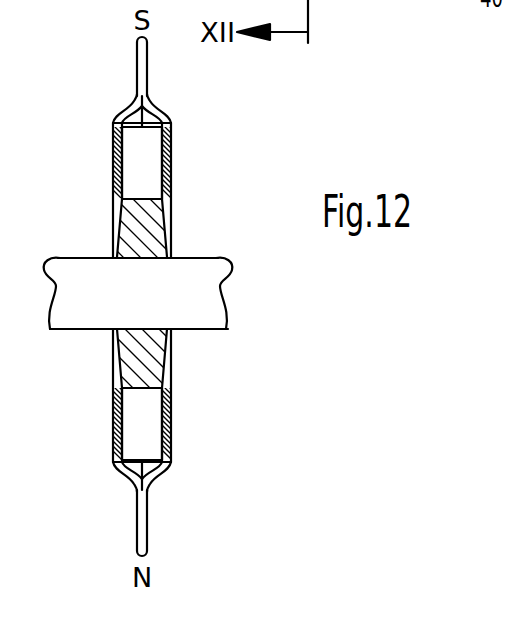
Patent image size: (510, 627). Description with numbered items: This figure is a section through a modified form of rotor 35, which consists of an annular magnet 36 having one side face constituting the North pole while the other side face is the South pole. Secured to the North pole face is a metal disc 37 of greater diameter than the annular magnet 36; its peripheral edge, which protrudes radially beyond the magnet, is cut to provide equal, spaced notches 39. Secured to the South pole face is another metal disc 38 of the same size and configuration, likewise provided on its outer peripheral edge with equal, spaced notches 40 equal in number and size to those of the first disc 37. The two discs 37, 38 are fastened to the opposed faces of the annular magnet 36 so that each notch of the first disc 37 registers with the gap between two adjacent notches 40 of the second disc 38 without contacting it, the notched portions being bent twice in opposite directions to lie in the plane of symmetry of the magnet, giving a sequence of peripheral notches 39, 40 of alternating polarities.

The rotor 35 is at (171, 187).
The annular magnet 36 is at (153, 137).
The metal disc 37 is at (117, 430).
The other metal disc 38 is at (171, 403).
The notches 39 is at (147, 517).
The notches 40 is at (142, 78).